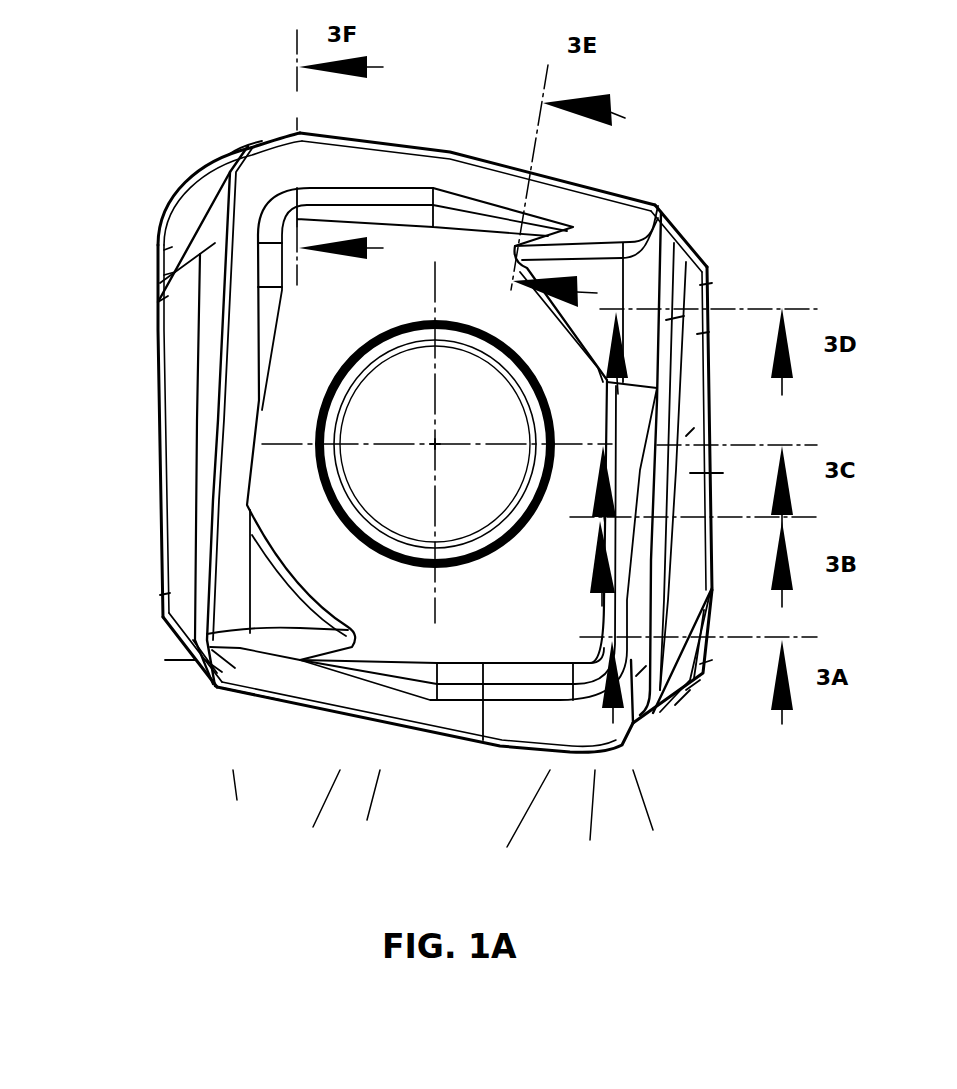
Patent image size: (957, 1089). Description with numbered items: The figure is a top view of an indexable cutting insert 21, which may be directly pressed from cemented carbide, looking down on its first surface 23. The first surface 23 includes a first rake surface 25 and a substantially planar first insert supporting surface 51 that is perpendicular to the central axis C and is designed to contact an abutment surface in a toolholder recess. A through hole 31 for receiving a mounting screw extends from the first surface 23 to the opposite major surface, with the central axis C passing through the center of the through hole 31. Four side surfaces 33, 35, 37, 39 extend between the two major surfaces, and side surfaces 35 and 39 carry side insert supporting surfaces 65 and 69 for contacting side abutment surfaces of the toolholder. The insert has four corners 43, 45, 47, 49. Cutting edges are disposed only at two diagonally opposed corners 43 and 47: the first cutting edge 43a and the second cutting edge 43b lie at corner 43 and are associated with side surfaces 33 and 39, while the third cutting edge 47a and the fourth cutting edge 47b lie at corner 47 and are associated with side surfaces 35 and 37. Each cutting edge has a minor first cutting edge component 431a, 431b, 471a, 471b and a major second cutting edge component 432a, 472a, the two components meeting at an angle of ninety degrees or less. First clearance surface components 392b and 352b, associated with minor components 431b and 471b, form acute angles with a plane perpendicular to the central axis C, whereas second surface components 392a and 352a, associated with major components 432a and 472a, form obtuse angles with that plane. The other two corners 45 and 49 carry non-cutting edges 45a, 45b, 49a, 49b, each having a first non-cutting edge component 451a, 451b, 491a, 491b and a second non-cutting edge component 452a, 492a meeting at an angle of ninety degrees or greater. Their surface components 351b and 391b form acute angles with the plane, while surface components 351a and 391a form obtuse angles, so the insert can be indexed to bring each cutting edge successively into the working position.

The cutting insert 21 is at (731, 133).
The first surface 23 is at (422, 622).
The first rake surface 25 is at (345, 172).
The through hole 31 is at (410, 422).
The central axis C is at (435, 444).
The side surface 33 is at (474, 158).
The side surface 35 is at (690, 432).
The second surface component 351a is at (675, 317).
The first surface component 351b is at (703, 333).
The second surface component 352a is at (641, 670).
The first clearance surface 352b is at (707, 662).
The side surface 37 is at (357, 727).
The side surface 39 is at (177, 473).
The second surface component 391a is at (165, 627).
The first surface component 391b is at (163, 612).
The second surface component 392a is at (160, 299).
The first clearance surface 392b is at (167, 270).
The corner 43 is at (196, 130).
The first cutting edge 43a is at (243, 148).
The second cutting edge 43b is at (167, 233).
The first cutting edge component 431a is at (285, 158).
The first cutting edge component 431b is at (170, 247).
The second cutting edge component 432a is at (230, 220).
The corner 45 is at (716, 235).
The non-cutting edge 45a is at (653, 195).
The non-cutting edge 45b is at (713, 265).
The first non-cutting edge component 451a is at (640, 193).
The first non-cutting edge component 451b is at (705, 283).
The second non-cutting edge component 452a is at (663, 262).
The corner 47 is at (713, 763).
The third cutting edge 47a is at (625, 746).
The fourth cutting edge 47b is at (694, 684).
The first cutting edge component 471a is at (600, 757).
The first cutting edge component 471b is at (712, 622).
The second cutting edge component 472a is at (681, 699).
The corner 49 is at (207, 723).
The non-cutting edge 49a is at (223, 693).
The non-cutting edge 49b is at (167, 673).
The first non-cutting edge component 491a is at (250, 693).
The first non-cutting edge component 491b is at (160, 593).
The second non-cutting edge component 492a is at (195, 632).
The first insert supporting surface 51 is at (460, 257).
The side insert supporting surface 65 is at (723, 473).
The side insert supporting surface 69 is at (180, 540).